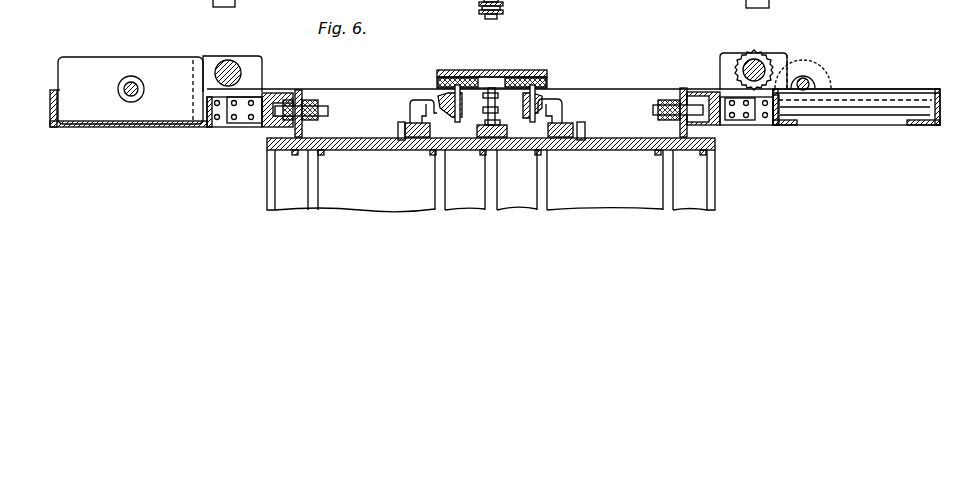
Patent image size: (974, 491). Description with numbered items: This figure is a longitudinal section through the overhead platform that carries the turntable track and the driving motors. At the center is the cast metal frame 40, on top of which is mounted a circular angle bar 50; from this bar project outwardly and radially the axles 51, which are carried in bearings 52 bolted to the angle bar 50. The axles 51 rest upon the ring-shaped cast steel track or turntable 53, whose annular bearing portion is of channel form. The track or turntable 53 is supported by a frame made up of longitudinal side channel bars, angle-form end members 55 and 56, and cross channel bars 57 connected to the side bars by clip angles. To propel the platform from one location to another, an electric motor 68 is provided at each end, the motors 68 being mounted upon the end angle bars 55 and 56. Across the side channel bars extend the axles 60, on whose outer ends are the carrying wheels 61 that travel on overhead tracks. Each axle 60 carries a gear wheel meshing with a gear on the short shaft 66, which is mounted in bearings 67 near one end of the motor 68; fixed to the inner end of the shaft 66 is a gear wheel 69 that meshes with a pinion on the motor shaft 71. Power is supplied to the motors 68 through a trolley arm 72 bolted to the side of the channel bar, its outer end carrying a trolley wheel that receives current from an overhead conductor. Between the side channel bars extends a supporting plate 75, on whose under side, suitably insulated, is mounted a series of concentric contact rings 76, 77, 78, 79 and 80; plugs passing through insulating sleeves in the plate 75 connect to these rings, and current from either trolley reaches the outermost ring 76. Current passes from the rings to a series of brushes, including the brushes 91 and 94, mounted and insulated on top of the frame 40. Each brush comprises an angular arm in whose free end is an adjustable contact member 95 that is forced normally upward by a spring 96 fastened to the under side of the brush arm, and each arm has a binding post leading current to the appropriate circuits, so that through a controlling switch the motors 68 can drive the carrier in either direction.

The cast metal frame 40 is at (618, 152).
The circular angle bar 50 is at (305, 133).
The axles 51 is at (330, 110).
The bearings 52 is at (306, 105).
The track or turntable 53 is at (270, 126).
The end member 55 is at (68, 126).
The end member 56 is at (780, 127).
The cross channel bars 57 is at (205, 127).
The axles 60 is at (232, 63).
The carrying wheels 61 is at (258, 3).
The short shaft 66 is at (447, 6).
The bearings 67 is at (778, 8).
The electric motor 68 is at (105, 67).
The gear wheel 69 is at (815, 65).
The motor shaft 71 is at (145, 87).
The trolley arm 72 is at (504, 8).
The supporting plate 75 is at (548, 72).
The contact ring 76 is at (548, 82).
The contact ring 77 is at (540, 70).
The contact ring 78 is at (527, 70).
The contact ring 79 is at (508, 70).
The contact ring 80 is at (485, 70).
The brush 91 is at (572, 110).
The brush 94 is at (410, 107).
The adjustable contact member 95 is at (468, 70).
The spring 96 is at (447, 120).